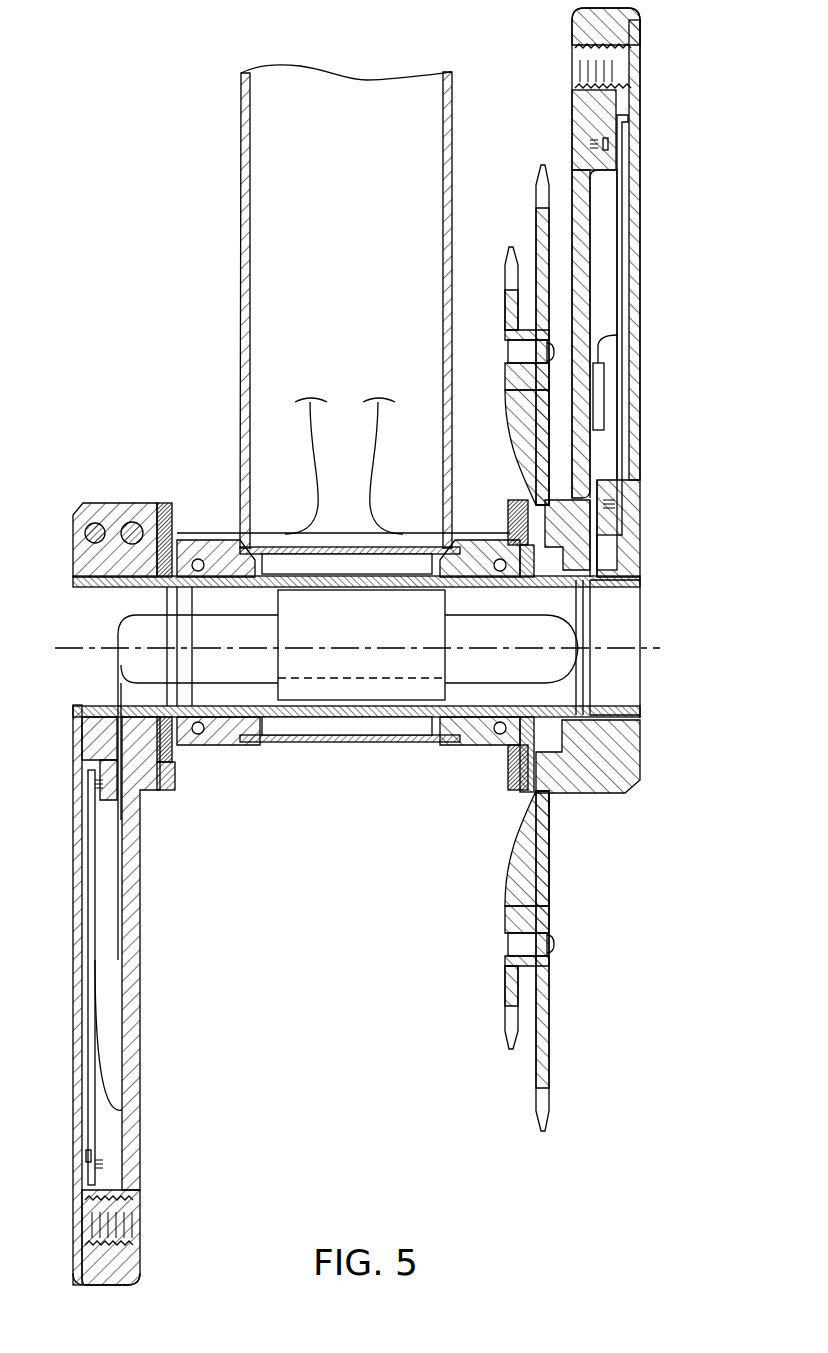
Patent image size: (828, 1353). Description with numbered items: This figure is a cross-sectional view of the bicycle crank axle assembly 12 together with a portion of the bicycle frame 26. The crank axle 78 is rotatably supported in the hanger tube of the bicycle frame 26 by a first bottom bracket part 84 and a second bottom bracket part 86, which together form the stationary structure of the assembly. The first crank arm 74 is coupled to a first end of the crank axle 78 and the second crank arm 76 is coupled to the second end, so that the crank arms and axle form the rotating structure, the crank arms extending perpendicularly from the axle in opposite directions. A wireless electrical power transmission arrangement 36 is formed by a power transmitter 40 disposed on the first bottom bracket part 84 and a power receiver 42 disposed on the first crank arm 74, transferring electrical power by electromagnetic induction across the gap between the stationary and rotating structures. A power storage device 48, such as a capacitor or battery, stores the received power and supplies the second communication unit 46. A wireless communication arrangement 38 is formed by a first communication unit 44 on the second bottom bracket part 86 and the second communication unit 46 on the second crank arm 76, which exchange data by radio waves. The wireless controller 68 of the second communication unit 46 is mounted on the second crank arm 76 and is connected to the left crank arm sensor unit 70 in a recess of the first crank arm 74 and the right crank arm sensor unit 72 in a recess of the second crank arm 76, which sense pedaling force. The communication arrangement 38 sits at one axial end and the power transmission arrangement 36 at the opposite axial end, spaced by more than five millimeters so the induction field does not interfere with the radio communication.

The bicycle crank axle assembly 12 is at (703, 74).
The bicycle frame 26 is at (240, 263).
The wireless electrical power transmission arrangement 36 is at (211, 681).
The wireless communication arrangement 38 is at (476, 678).
The power transmitter 40 is at (193, 763).
The power receiver 42 is at (167, 800).
The first communication unit 44 is at (493, 790).
The second communication unit 46 is at (520, 806).
The power storage device 48 is at (385, 700).
The wireless controller 68 is at (603, 400).
The left crank arm sensor unit 70 is at (85, 878).
The right crank arm sensor unit 72 is at (640, 230).
The first crank arm 74 is at (140, 1005).
The second crank arm 76 is at (576, 36).
The crank axle 78 is at (318, 740).
The first bottom bracket part 84 is at (208, 757).
The second bottom bracket part 86 is at (480, 750).